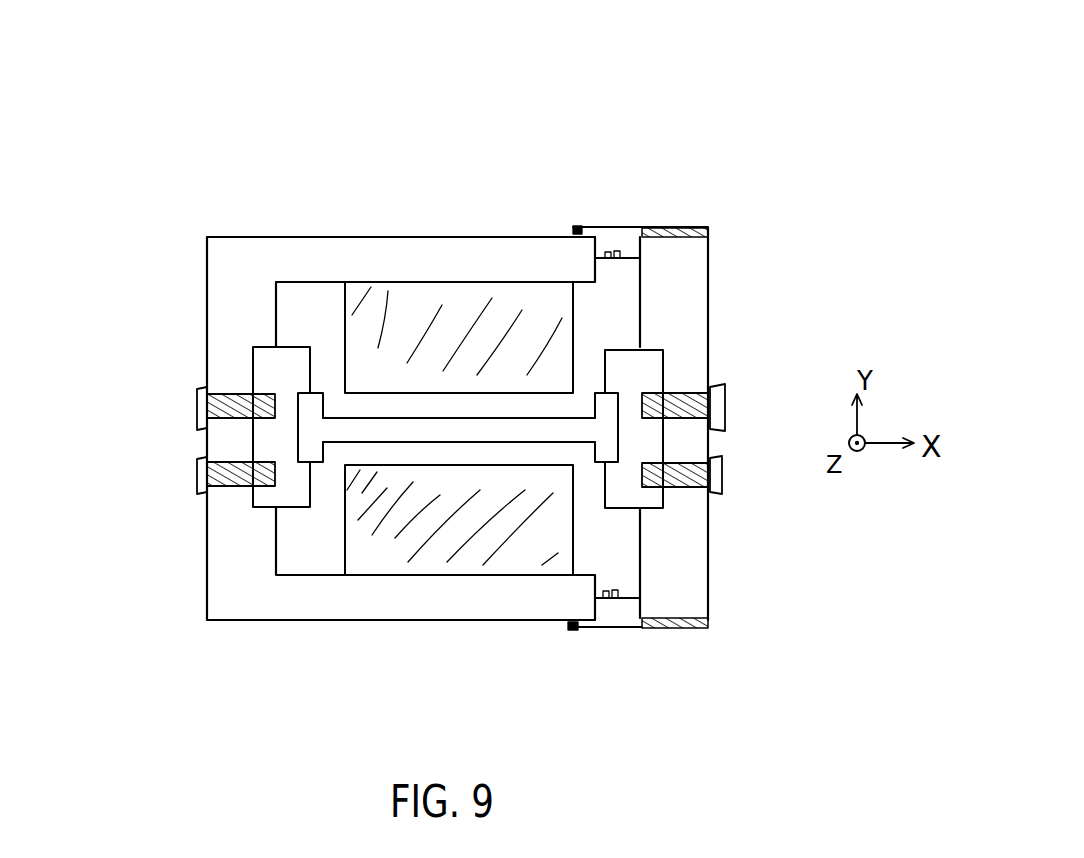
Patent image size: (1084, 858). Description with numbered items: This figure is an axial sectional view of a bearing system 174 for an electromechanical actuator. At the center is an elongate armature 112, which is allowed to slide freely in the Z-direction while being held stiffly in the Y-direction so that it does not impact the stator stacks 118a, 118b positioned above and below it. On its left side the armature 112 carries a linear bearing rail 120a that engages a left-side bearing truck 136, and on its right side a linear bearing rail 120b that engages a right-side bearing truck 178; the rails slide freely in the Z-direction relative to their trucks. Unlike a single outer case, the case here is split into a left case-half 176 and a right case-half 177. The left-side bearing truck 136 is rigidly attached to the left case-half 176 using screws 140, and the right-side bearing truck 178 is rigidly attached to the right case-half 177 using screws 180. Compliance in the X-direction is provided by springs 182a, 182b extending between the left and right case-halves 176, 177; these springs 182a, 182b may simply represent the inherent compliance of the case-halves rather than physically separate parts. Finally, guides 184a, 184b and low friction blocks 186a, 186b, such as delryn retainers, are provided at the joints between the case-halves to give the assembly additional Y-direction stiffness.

The bearing system 174 is at (411, 116).
The left case-half 176 is at (430, 237).
The right case-half 177 is at (693, 267).
The right-side bearing truck 178 is at (645, 372).
The left-side bearing truck 136 is at (272, 357).
The linear bearing rail 120a is at (310, 390).
The linear bearing rail 120b is at (603, 437).
The armature 112 is at (430, 428).
The stack 118a is at (362, 334).
The stack 118b is at (382, 542).
The screws 140 is at (197, 483).
The screws 180 is at (723, 473).
The spring 182a is at (621, 250).
The spring 182b is at (620, 612).
The guide 184a is at (590, 222).
The guide 184b is at (597, 633).
The low friction block 186a is at (555, 236).
The low friction block 186b is at (562, 628).